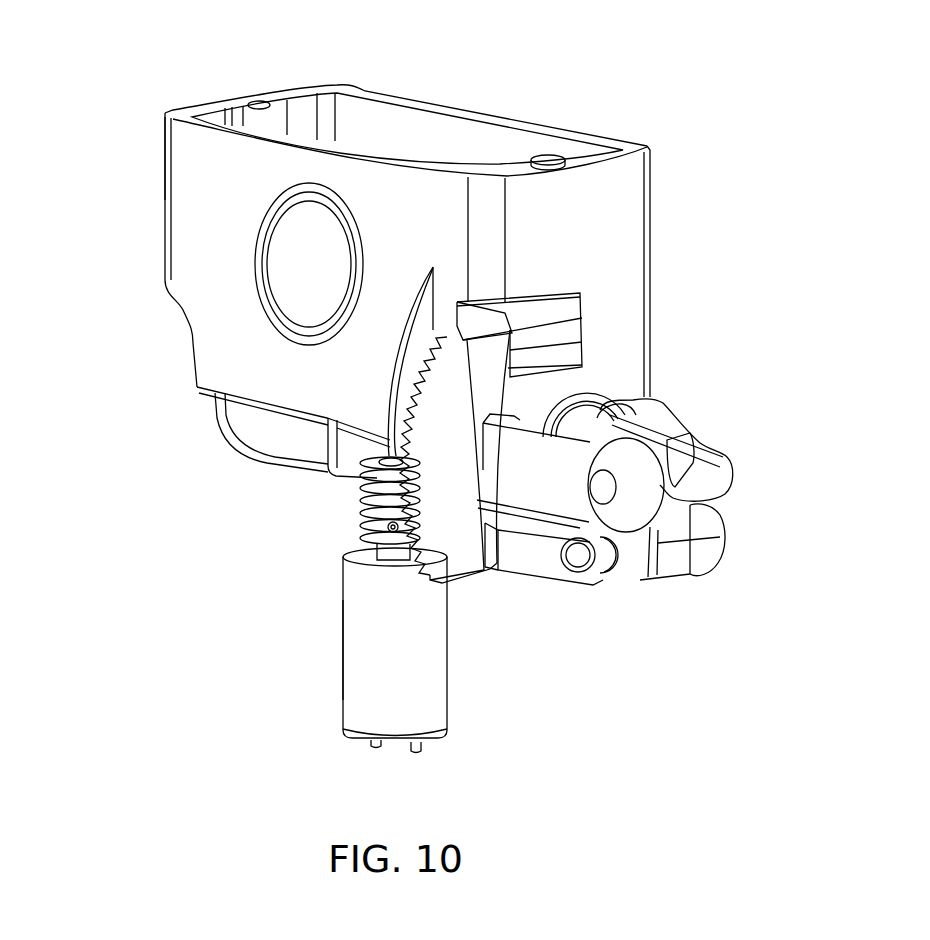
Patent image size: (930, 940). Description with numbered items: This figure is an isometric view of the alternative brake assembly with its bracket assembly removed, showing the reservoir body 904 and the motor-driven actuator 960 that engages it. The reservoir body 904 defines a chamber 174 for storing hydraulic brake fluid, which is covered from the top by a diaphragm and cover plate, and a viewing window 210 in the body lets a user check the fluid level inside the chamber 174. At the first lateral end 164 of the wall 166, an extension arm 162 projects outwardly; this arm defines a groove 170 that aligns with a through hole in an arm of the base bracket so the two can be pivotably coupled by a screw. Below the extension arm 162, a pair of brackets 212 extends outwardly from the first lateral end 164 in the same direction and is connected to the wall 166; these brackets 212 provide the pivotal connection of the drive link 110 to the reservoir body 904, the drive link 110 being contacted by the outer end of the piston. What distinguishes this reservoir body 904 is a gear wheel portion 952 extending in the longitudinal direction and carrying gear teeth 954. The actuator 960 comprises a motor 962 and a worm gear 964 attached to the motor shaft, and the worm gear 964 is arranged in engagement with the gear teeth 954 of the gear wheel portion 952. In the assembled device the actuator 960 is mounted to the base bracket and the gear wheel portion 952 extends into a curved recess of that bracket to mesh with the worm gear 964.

The drive link 110 is at (670, 443).
The extension arm 162 is at (570, 497).
The first lateral end 164 is at (607, 237).
The wall 166 is at (178, 112).
The groove 170 is at (597, 493).
The chamber 174 is at (398, 142).
The viewing window 210 is at (290, 253).
The brackets 212 is at (707, 538).
The reservoir body 904 is at (168, 150).
The gear wheel portion 952 is at (477, 558).
The gear teeth 954 is at (415, 380).
The actuator 960 is at (340, 673).
The motor 962 is at (373, 632).
The worm gear 964 is at (363, 492).